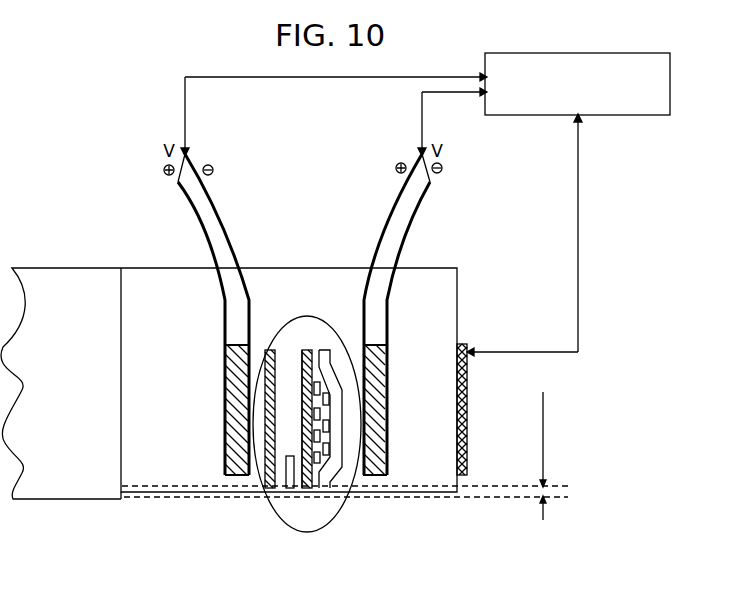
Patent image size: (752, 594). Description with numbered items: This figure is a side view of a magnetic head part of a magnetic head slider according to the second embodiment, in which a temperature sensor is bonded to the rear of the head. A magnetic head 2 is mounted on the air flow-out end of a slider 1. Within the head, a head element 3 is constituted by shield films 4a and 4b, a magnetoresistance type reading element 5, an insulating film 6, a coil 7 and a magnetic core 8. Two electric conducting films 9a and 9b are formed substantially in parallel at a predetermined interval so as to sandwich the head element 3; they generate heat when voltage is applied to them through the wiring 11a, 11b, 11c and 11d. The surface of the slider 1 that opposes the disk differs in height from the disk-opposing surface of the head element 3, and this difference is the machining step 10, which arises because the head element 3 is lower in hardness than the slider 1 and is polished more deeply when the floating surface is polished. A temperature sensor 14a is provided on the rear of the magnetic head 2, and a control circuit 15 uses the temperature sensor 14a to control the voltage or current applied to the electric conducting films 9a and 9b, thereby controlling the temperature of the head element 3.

The slider 1 is at (48, 302).
The magnetic head 2 is at (175, 295).
The head element 3 is at (306, 332).
The shield film 4a is at (266, 349).
The shield film 4b is at (297, 345).
The magnetoresistance type reading element 5 is at (290, 490).
The insulating film 6 is at (300, 490).
The coil 7 is at (325, 348).
The magnetic core 8 is at (347, 345).
The electric conducting film 9a is at (223, 401).
The electric conducting film 9b is at (389, 401).
The machining step (PTR) 10 is at (530, 456).
The wiring 11a is at (189, 204).
The wiring 11b is at (212, 195).
The wiring 11c is at (398, 193).
The wiring 11d is at (419, 206).
The temperature sensor 14a is at (468, 398).
The control circuit 15 is at (618, 117).